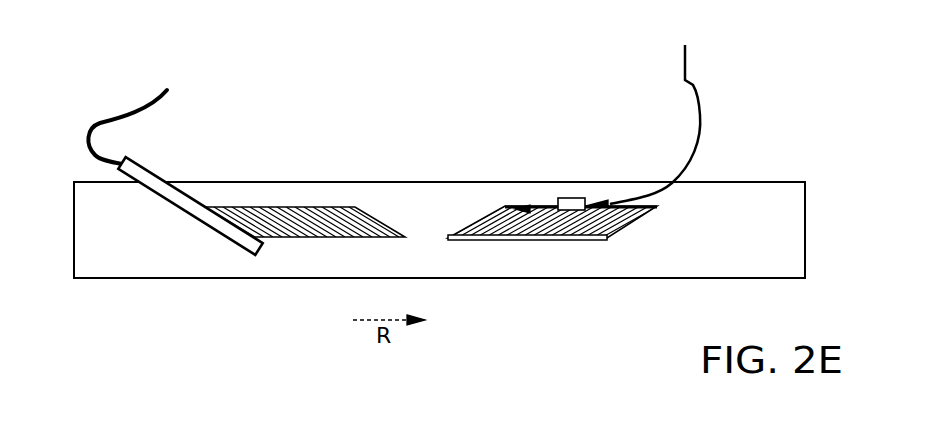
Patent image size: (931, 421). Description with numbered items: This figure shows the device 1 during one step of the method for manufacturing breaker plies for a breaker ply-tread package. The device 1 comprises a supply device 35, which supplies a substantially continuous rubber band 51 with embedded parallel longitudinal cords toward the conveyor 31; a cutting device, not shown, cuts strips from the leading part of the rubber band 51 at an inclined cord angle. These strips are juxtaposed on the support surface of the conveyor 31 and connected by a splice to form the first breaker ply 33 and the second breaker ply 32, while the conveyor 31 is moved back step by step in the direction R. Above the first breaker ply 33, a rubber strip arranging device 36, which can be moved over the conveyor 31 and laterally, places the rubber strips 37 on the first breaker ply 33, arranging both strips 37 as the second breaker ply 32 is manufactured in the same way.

The device 1 is at (175, 128).
The rubber band 51 is at (176, 89).
The supply device 35 is at (157, 165).
The conveyor 31 is at (790, 193).
The second breaker ply 32 is at (281, 218).
The first breaker ply 33 is at (622, 240).
The rubber strip arranging device 36 is at (573, 198).
The rubber strips 37 is at (652, 206).